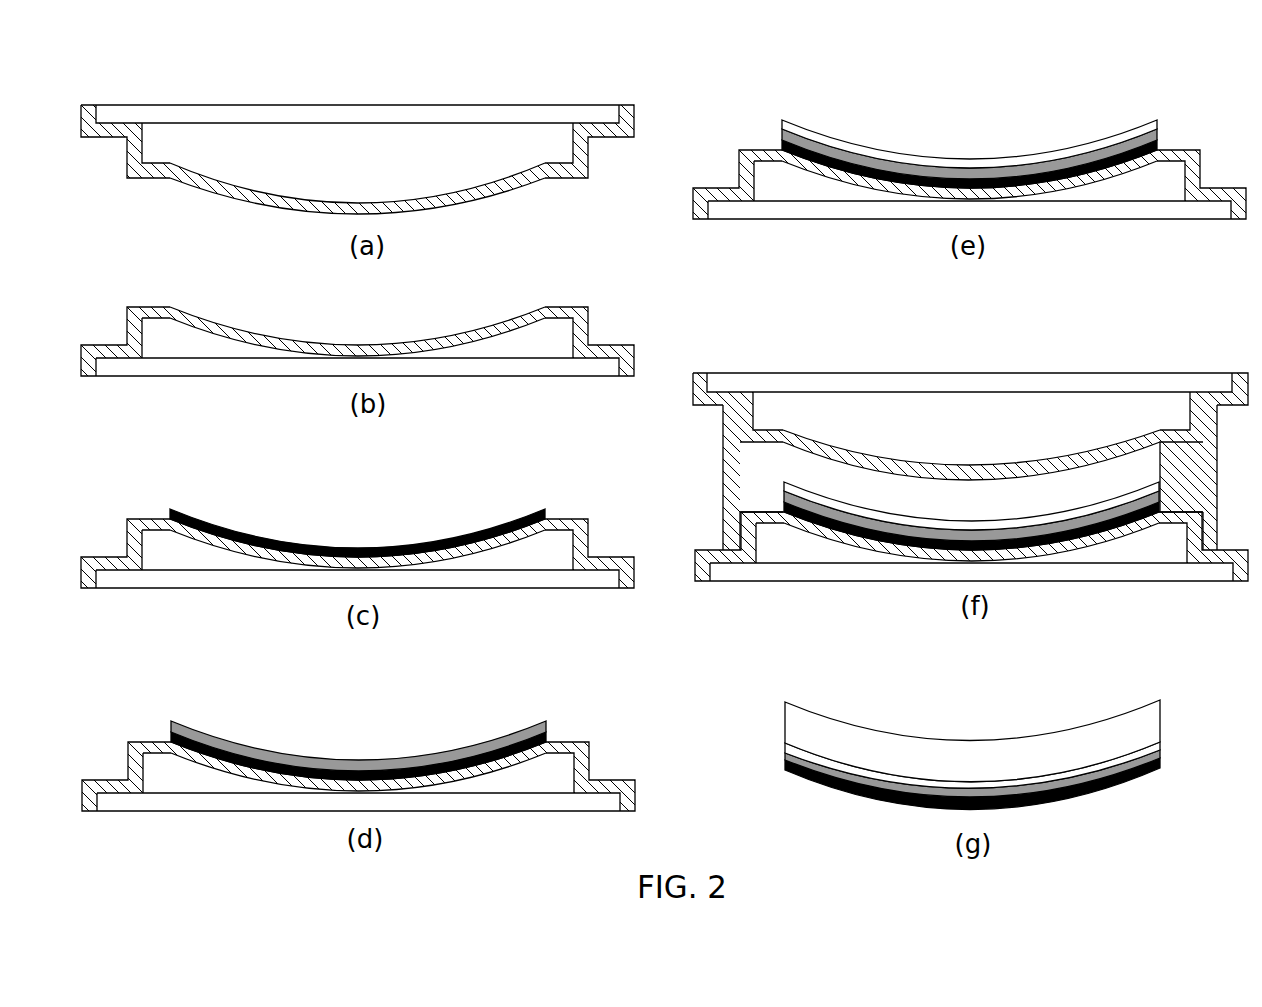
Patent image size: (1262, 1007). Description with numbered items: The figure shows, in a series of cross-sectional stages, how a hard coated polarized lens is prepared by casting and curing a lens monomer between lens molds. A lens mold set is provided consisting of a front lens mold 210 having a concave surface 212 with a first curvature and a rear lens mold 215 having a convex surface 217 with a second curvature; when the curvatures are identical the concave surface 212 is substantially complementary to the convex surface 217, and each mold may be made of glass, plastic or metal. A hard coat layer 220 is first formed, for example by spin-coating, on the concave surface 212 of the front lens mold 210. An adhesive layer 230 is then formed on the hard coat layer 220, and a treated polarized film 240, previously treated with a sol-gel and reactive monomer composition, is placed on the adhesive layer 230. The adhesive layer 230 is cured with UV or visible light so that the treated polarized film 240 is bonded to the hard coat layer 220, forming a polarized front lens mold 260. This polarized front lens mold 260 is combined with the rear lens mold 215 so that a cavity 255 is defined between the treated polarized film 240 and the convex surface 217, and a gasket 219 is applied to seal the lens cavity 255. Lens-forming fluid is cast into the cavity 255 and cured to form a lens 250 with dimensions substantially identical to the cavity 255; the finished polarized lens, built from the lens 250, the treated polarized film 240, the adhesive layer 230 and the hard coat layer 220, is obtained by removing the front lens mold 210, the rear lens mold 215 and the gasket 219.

The front lens mold 210 is at (187, 338).
The concave surface 212 is at (290, 340).
The rear lens mold 215 is at (437, 173).
The convex surface 217 is at (503, 190).
The gasket 219 is at (750, 483).
The hard coat layer 220 is at (430, 542).
The adhesive layer 230 is at (303, 760).
The treated polarized film 240 is at (877, 153).
The lens 250 is at (1088, 755).
The lens cavity 255 is at (950, 503).
The polarized front lens mold 260 is at (1208, 139).